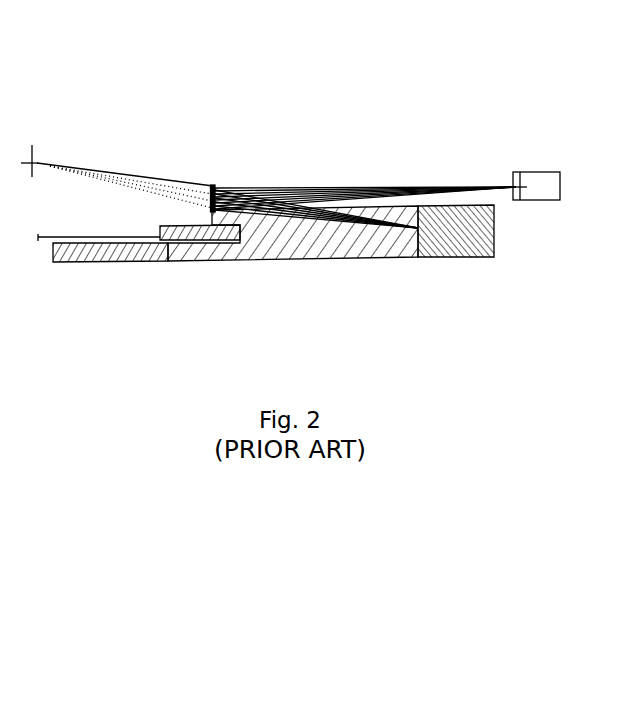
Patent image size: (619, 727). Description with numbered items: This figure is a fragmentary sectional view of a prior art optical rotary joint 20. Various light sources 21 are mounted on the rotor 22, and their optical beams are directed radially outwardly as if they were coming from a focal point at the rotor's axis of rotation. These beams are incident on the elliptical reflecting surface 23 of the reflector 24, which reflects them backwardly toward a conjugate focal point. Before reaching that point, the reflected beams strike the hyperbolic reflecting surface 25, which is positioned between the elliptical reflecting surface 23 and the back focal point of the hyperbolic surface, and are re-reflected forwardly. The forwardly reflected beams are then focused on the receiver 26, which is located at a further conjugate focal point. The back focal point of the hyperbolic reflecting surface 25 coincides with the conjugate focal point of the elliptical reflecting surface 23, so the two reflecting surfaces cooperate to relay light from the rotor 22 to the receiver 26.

The optical rotary joint 20 is at (314, 100).
The light source 21 is at (156, 222).
The rotor 22 is at (114, 272).
The elliptical reflecting surface 23 is at (410, 248).
The reflector 24 is at (472, 268).
The hyperbolic reflecting surface 25 is at (218, 178).
The receiver 26 is at (556, 166).